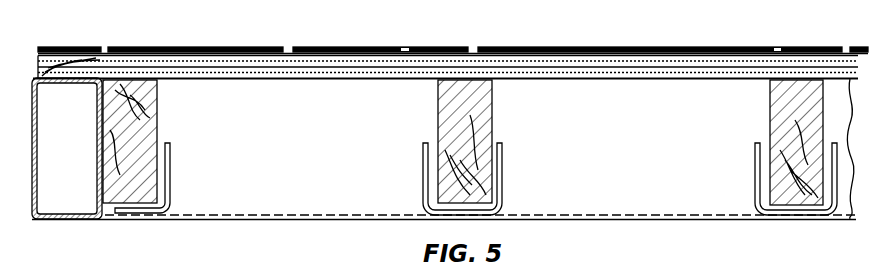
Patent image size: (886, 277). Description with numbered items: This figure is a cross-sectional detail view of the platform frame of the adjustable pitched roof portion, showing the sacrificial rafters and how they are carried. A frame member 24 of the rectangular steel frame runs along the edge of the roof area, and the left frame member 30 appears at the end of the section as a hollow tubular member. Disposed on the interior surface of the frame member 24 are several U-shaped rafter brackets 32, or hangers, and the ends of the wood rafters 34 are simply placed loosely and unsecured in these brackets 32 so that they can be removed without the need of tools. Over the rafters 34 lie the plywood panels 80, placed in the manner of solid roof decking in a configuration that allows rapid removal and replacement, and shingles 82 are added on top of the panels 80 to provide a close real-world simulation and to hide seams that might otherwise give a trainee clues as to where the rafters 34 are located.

The top frame member 24 is at (334, 146).
The left frame member 30 is at (34, 217).
The U-shaped rafter bracket 32 is at (168, 185).
The wood rafter 34 is at (157, 120).
The plywood panel 80 is at (283, 58).
The shingles 82 is at (455, 47).